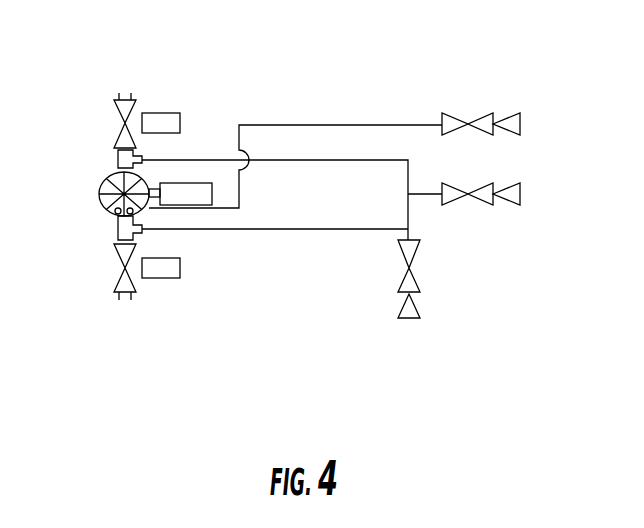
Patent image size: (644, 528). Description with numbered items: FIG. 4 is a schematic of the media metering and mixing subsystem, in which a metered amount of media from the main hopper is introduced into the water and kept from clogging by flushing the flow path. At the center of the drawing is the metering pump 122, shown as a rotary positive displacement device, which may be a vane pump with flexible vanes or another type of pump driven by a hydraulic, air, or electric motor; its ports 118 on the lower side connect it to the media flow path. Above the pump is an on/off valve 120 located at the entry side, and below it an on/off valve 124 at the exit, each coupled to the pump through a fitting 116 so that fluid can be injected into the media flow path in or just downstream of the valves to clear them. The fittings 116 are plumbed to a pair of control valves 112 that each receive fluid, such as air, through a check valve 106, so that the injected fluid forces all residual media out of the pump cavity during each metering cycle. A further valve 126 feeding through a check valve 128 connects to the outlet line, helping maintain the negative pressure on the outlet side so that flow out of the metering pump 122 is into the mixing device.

The check valve 106 is at (520, 124).
The control valve 112 is at (453, 113).
The connector fitting 116 is at (148, 159).
The pump ports 118 is at (113, 218).
The upper valve 120 is at (118, 123).
The pump 122 is at (100, 186).
The lower valve 124 is at (113, 268).
The drain valve 126 is at (420, 269).
The check valve 128 is at (409, 322).